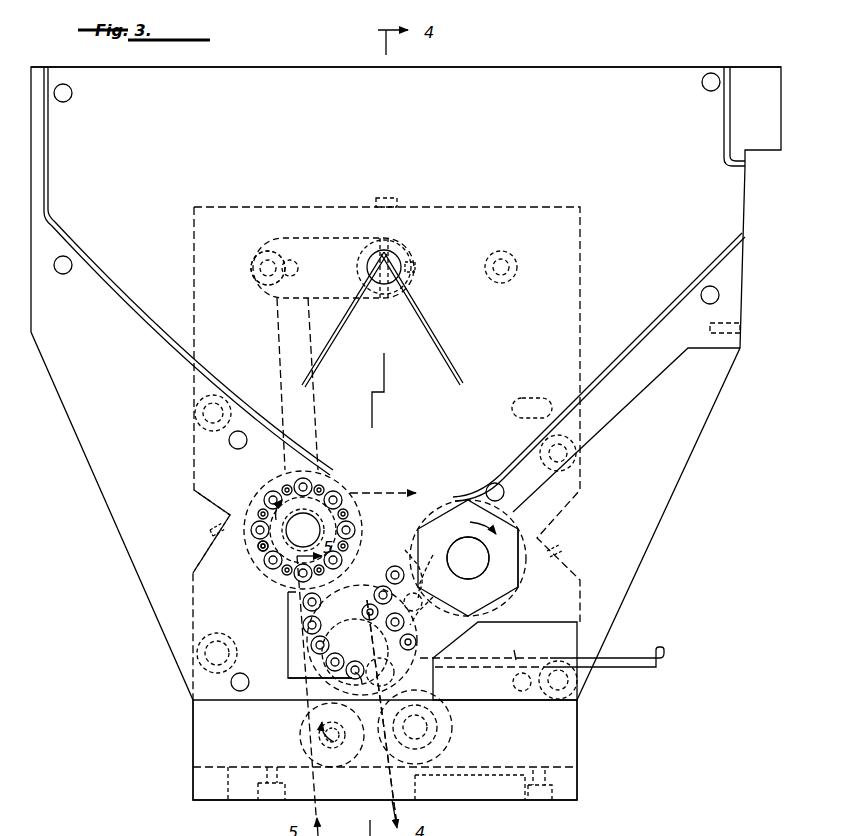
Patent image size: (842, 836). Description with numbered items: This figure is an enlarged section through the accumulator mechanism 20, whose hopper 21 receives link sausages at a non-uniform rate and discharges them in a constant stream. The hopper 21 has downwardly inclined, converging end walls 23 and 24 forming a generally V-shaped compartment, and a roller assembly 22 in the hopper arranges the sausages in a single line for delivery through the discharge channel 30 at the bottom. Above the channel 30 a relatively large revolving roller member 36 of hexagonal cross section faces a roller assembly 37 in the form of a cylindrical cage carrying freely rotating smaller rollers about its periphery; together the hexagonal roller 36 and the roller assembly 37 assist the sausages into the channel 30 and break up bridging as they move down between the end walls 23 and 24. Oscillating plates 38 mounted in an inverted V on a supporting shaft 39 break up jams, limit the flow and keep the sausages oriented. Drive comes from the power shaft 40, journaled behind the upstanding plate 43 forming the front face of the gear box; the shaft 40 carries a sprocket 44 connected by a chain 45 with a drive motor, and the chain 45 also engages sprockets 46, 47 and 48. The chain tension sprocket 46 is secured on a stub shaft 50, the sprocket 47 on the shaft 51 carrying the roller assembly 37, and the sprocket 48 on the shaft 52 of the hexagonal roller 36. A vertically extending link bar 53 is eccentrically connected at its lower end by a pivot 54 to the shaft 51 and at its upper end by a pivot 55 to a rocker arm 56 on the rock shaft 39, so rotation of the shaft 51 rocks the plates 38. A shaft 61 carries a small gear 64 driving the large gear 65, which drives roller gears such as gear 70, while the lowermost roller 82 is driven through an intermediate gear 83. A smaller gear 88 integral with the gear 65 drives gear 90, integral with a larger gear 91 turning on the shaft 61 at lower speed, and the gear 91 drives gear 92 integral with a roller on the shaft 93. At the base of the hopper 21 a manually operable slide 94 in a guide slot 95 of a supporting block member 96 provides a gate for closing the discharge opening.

The accumulator mechanism 20 is at (692, 65).
The hopper 21 is at (621, 80).
The roller assembly 22 is at (203, 549).
The end wall 23 is at (129, 292).
The end wall 24 is at (623, 357).
The channel 30 is at (297, 614).
The roller member of hexagonal cross section 36 is at (512, 556).
The roller assembly 37 is at (262, 506).
The oscillating plates 38 is at (430, 305).
The supporting shaft 39 is at (398, 258).
The power shaft 40 is at (438, 727).
The upstanding plate 43 is at (580, 283).
The sprocket 44 is at (455, 718).
The chain 45 is at (400, 808).
The chain tension sprocket 46 is at (300, 718).
The sprocket 47 is at (272, 570).
The sprocket 48 is at (517, 575).
The stub shaft 50 is at (335, 742).
The shaft 51 is at (260, 552).
The shaft 52 is at (480, 556).
The link bar 53 is at (280, 348).
The pivot 54 is at (300, 482).
The pivot 55 is at (300, 265).
The rocker arm 56 is at (355, 237).
The shaft 61 is at (361, 682).
The small gear 64 is at (330, 690).
The large gear 65 is at (406, 558).
The gear 70 is at (382, 768).
The roller 82 is at (432, 566).
The intermediate gear 83 is at (436, 597).
The smaller integral gear 88 is at (352, 576).
The gear 90 is at (330, 672).
The larger gear 91 is at (318, 655).
The gear 92 is at (373, 603).
The shaft 93 is at (409, 641).
The slide 94 is at (628, 667).
The guide slot 95 is at (504, 649).
The supporting block member 96 is at (575, 625).